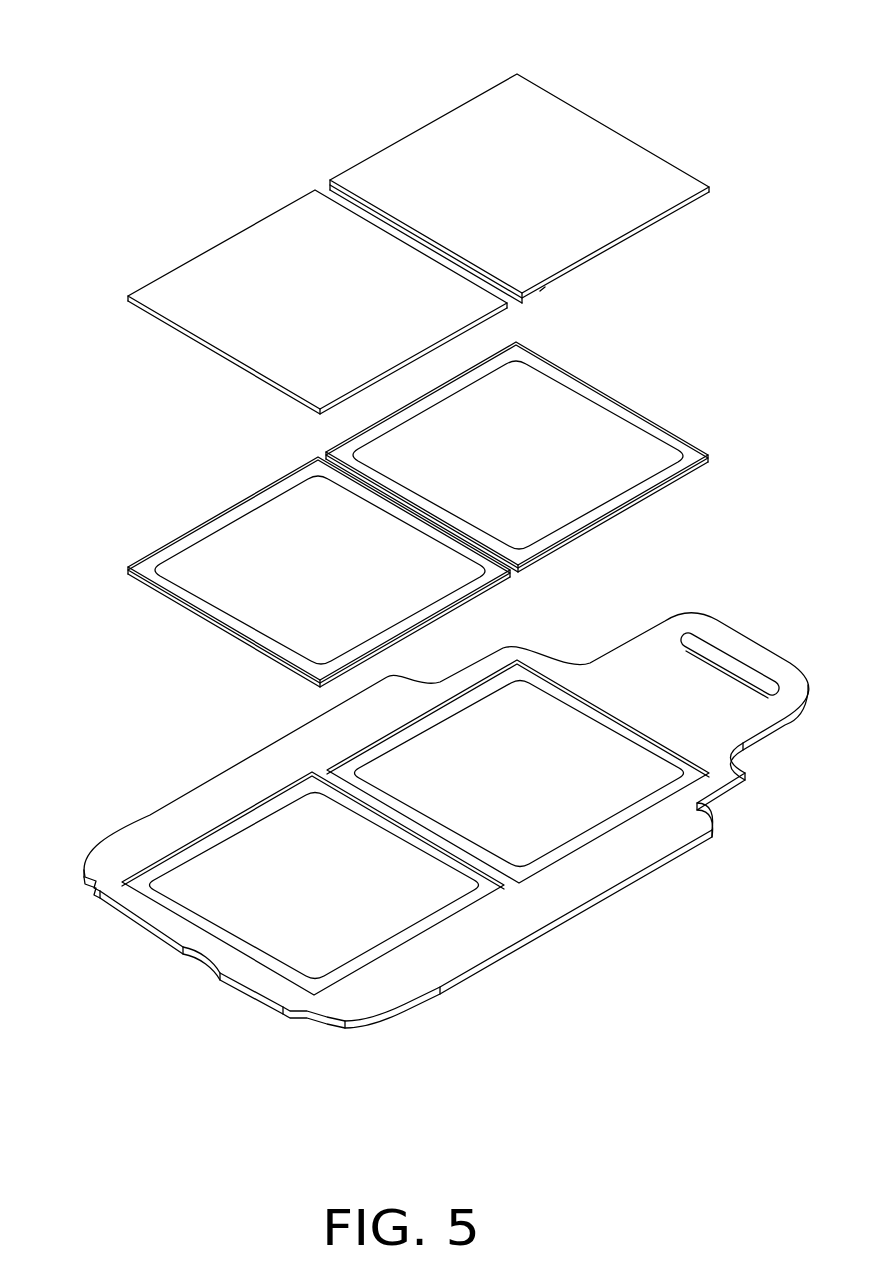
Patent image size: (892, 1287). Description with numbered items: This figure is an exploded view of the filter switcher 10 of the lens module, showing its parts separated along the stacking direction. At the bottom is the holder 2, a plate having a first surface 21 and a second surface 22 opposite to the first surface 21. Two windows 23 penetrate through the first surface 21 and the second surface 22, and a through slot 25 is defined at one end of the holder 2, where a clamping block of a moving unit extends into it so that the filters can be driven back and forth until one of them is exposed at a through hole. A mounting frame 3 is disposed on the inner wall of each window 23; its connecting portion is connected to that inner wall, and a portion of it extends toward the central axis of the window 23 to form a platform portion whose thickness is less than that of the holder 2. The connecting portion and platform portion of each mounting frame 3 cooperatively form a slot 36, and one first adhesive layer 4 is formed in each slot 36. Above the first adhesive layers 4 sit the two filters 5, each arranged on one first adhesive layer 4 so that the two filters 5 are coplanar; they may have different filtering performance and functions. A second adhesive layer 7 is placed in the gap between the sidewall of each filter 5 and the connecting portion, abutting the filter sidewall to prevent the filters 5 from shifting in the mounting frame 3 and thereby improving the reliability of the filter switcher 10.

The filter switcher 10 is at (464, 32).
The filter 5 is at (372, 173).
The second adhesive layer 7 is at (228, 507).
The first adhesive layer 4 is at (393, 514).
The holder 2 is at (423, 820).
The first surface 21 is at (587, 885).
The second surface 22 is at (639, 880).
The window 23 is at (373, 827).
The through slot 25 is at (753, 683).
The mounting frame 3 is at (270, 883).
The slot 36 is at (185, 857).